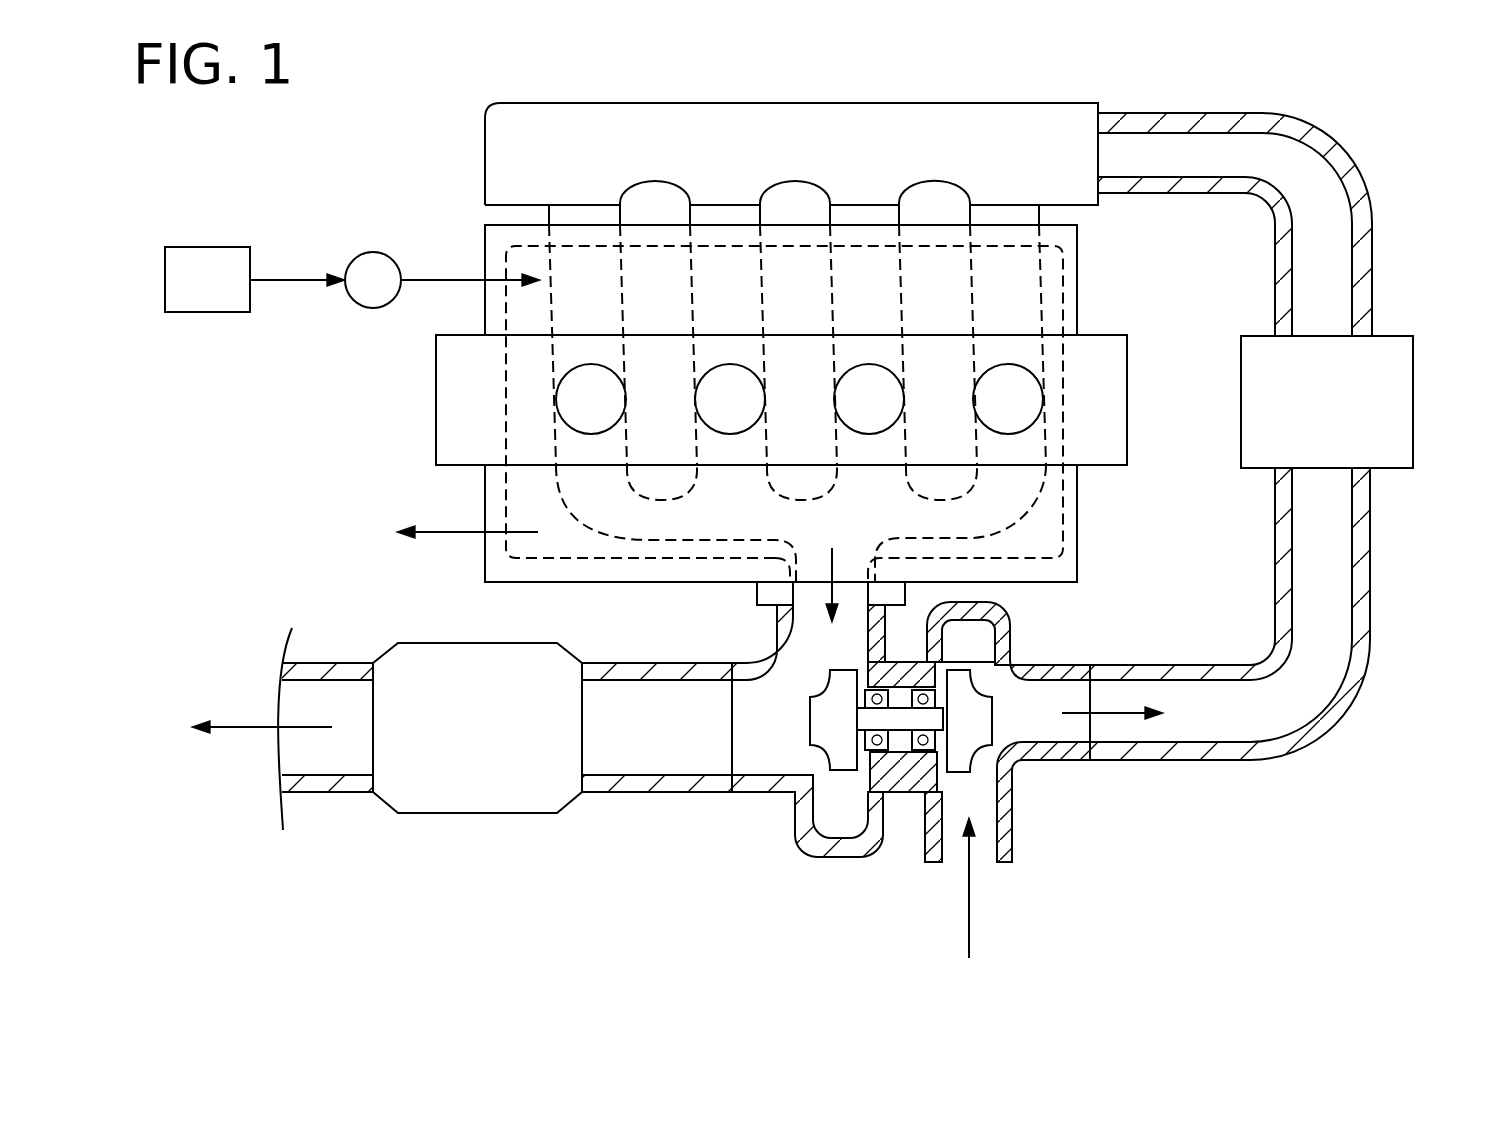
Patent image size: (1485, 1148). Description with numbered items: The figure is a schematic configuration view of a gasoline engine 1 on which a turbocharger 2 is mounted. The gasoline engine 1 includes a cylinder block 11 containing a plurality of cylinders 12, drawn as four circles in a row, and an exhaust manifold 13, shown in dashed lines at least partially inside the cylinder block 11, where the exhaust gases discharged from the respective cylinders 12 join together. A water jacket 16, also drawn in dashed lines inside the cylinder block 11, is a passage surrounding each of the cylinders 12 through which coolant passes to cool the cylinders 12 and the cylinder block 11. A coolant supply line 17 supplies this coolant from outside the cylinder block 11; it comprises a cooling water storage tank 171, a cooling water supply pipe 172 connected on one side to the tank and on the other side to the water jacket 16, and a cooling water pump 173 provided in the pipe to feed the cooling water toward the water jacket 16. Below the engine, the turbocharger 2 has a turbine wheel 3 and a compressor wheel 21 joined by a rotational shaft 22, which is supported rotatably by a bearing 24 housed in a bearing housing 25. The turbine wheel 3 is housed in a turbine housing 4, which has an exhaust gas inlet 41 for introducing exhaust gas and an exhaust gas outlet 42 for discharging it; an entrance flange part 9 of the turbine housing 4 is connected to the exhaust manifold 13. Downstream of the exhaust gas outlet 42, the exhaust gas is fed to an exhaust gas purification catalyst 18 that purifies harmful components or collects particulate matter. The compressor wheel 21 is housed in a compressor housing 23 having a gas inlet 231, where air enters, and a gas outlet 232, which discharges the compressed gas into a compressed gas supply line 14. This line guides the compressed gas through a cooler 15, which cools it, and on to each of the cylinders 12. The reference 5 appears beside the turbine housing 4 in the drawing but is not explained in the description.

The gasoline engine 1 is at (296, 147).
The turbocharger 2 is at (1030, 857).
The turbine wheel 3 is at (862, 755).
The turbine housing 4 is at (807, 854).
The turbine scroll passage 5 is at (842, 857).
The entrance flange part 9 is at (755, 597).
The cylinder block 11 is at (1077, 292).
The cylinders 12 is at (705, 374).
The exhaust manifold 13 is at (1068, 497).
The compressed gas supply line 14 is at (1232, 762).
The cooler 15 is at (1390, 468).
The water jacket 16 is at (1068, 545).
The coolant supply line 17 is at (430, 275).
The exhaust gas purification catalyst 18 is at (487, 815).
The compressor wheel 21 is at (962, 772).
The rotational shaft 22 is at (900, 707).
The compressor housing 23 is at (1075, 665).
The bearing 24 is at (865, 750).
The bearing housing 25 is at (898, 794).
The exhaust gas inlet 41 is at (793, 615).
The exhaust gas outlet 42 is at (732, 795).
The cooling water storage tank 171 is at (205, 247).
The cooling water supply pipe 172 is at (293, 275).
The cooling water pump 173 is at (376, 252).
The gas inlet 231 is at (997, 865).
The gas outlet 232 is at (1103, 762).